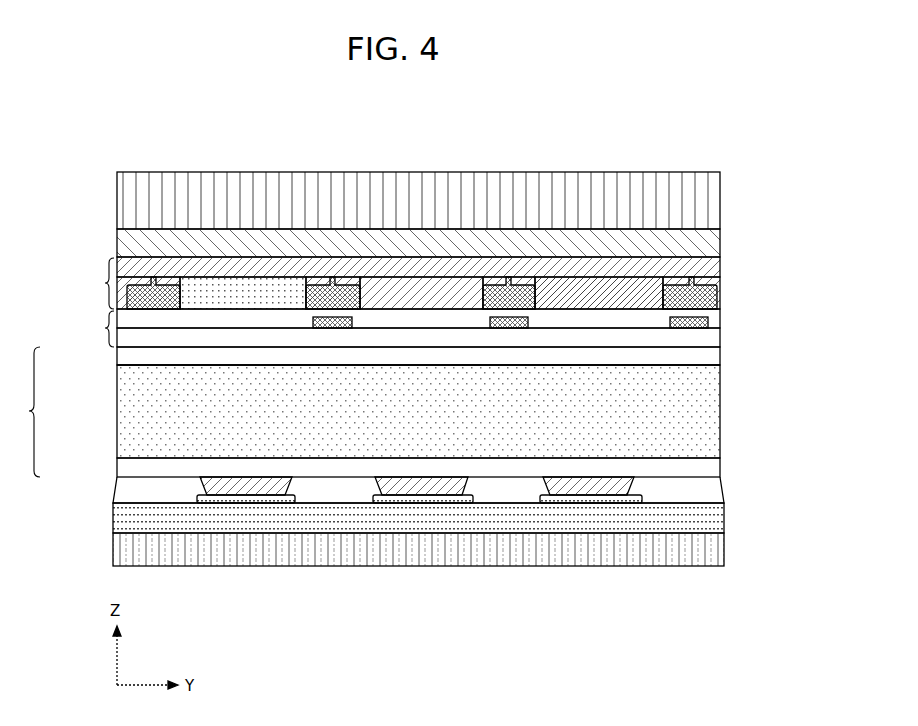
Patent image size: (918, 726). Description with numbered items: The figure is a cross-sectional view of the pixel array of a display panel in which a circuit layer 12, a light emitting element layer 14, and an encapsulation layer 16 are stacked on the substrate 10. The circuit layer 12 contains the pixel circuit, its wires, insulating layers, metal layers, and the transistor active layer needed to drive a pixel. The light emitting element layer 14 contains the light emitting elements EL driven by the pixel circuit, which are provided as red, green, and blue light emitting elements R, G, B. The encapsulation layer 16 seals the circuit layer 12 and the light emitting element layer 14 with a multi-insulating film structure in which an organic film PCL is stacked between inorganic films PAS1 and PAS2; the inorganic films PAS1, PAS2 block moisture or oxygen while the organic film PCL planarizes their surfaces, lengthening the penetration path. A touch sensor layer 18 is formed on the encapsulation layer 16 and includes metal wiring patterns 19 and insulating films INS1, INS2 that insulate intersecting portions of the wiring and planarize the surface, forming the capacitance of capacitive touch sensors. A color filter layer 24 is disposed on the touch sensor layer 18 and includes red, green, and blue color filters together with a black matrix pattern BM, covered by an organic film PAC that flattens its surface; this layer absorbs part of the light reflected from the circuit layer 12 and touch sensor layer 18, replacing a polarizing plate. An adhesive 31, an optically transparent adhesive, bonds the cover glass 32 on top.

The cover glass 32 is at (721, 190).
The adhesive 31 is at (721, 240).
The organic film PAC is at (721, 262).
The black matrix pattern BM is at (716, 299).
The metal wiring patterns 19 is at (708, 324).
The second insulating film INS2 is at (721, 330).
The first insulating film INS1 is at (721, 350).
The color filter layer 24 is at (96, 283).
The touch sensor layer 18 is at (96, 329).
The encapsulation layer 16 is at (21, 412).
The second inorganic film PAS2 is at (117, 360).
The organic film PCL is at (117, 413).
The first inorganic film PAS1 is at (117, 468).
The light emitting element EL is at (636, 490).
The light emitting element layer 14 is at (722, 485).
The circuit layer 12 is at (725, 518).
The substrate 10 is at (725, 549).
The red light emitting element R is at (247, 488).
The green light emitting element G is at (422, 488).
The blue light emitting element B is at (592, 488).